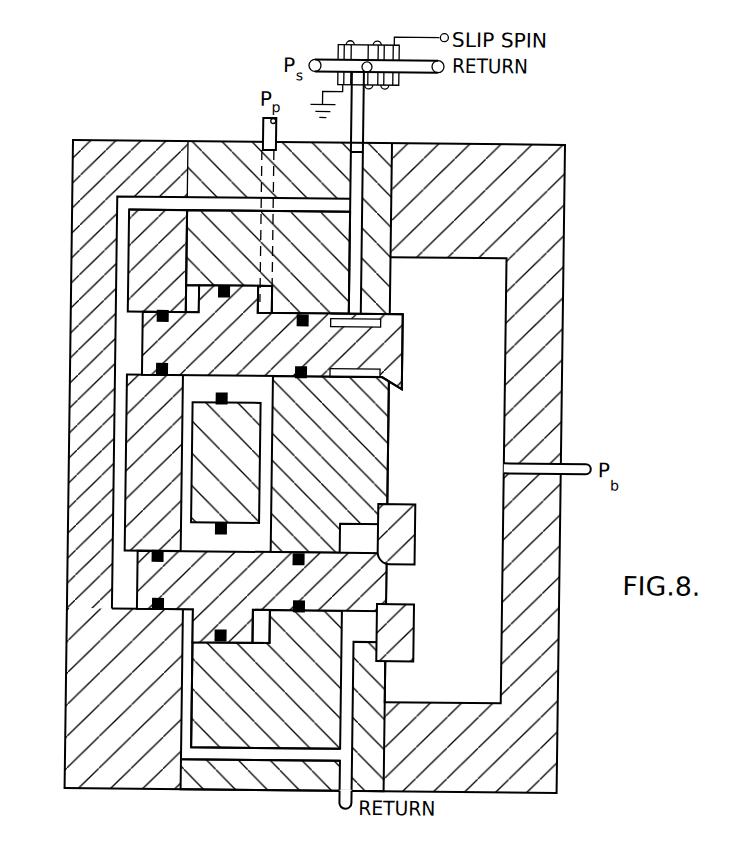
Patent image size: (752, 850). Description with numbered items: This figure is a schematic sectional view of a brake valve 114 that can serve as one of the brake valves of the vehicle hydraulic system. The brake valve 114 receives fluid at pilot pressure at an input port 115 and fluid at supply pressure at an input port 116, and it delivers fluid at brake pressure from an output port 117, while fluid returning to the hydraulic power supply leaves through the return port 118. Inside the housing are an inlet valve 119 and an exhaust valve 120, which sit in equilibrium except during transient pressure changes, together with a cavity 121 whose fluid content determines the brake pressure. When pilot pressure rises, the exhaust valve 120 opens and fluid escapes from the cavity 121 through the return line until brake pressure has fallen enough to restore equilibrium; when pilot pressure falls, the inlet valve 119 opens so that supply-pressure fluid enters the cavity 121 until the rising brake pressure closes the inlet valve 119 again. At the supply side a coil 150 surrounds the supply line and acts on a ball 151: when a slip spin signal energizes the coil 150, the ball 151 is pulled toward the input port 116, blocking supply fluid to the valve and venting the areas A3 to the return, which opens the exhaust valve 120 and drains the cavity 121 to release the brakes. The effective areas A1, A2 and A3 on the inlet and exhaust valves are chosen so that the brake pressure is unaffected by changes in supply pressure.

The brake valve 114 is at (46, 451).
The input port 115 is at (262, 124).
The input port 116 is at (337, 45).
The output port 117 is at (583, 458).
The port 118 is at (347, 794).
The inlet valve 119 is at (250, 344).
The exhaust valve 120 is at (259, 589).
The cavity 121 is at (500, 668).
The coil 150 is at (387, 84).
The ball 151 is at (362, 75).
The area A1 is at (409, 323).
The area A2 is at (271, 285).
The area A3 is at (130, 324).